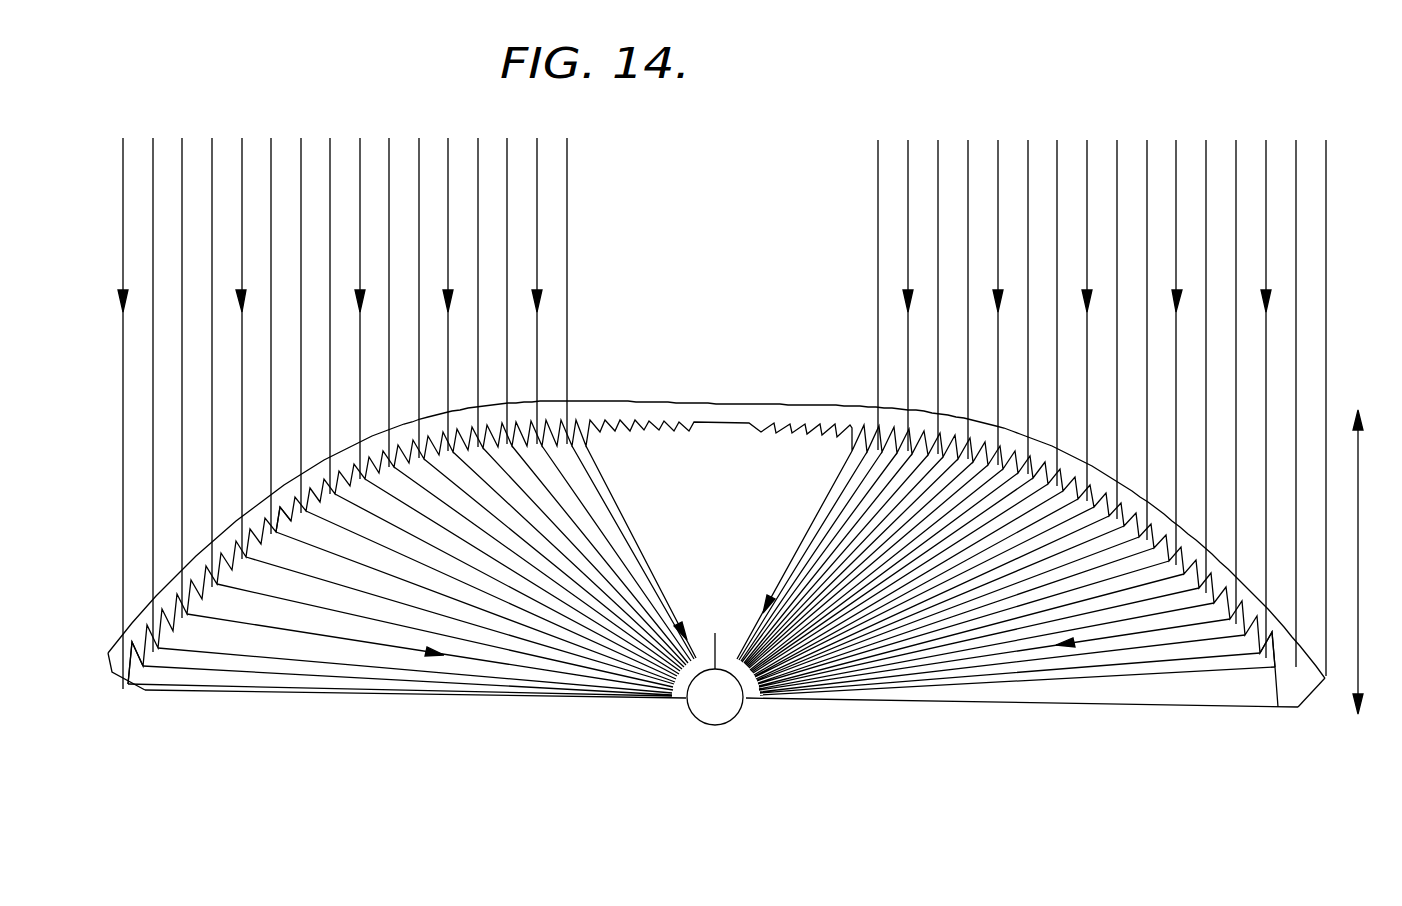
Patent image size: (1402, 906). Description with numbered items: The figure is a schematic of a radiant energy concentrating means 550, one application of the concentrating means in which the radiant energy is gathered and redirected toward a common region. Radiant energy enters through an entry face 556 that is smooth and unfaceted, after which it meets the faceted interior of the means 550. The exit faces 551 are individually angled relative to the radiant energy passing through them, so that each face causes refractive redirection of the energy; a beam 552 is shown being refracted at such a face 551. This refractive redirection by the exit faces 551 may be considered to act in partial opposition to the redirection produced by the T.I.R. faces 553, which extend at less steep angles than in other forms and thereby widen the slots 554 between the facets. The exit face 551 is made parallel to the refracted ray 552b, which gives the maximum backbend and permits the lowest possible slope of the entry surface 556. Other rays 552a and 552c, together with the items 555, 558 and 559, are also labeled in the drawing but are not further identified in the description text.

The radiant energy concentrating means 550 is at (730, 560).
The exit faces 551 is at (710, 595).
The beam 552 is at (701, 608).
The outer edge surface 552a is at (1293, 592).
The refracted ray 552b is at (1293, 638).
The edge light ray 552c is at (1188, 666).
The T.I.R. faces 553 is at (278, 534).
The slots 554 is at (184, 622).
The lens height 555 is at (1360, 480).
The entry face 556 is at (235, 527).
The receiver tube 558 is at (712, 724).
The base surface 559 is at (897, 708).